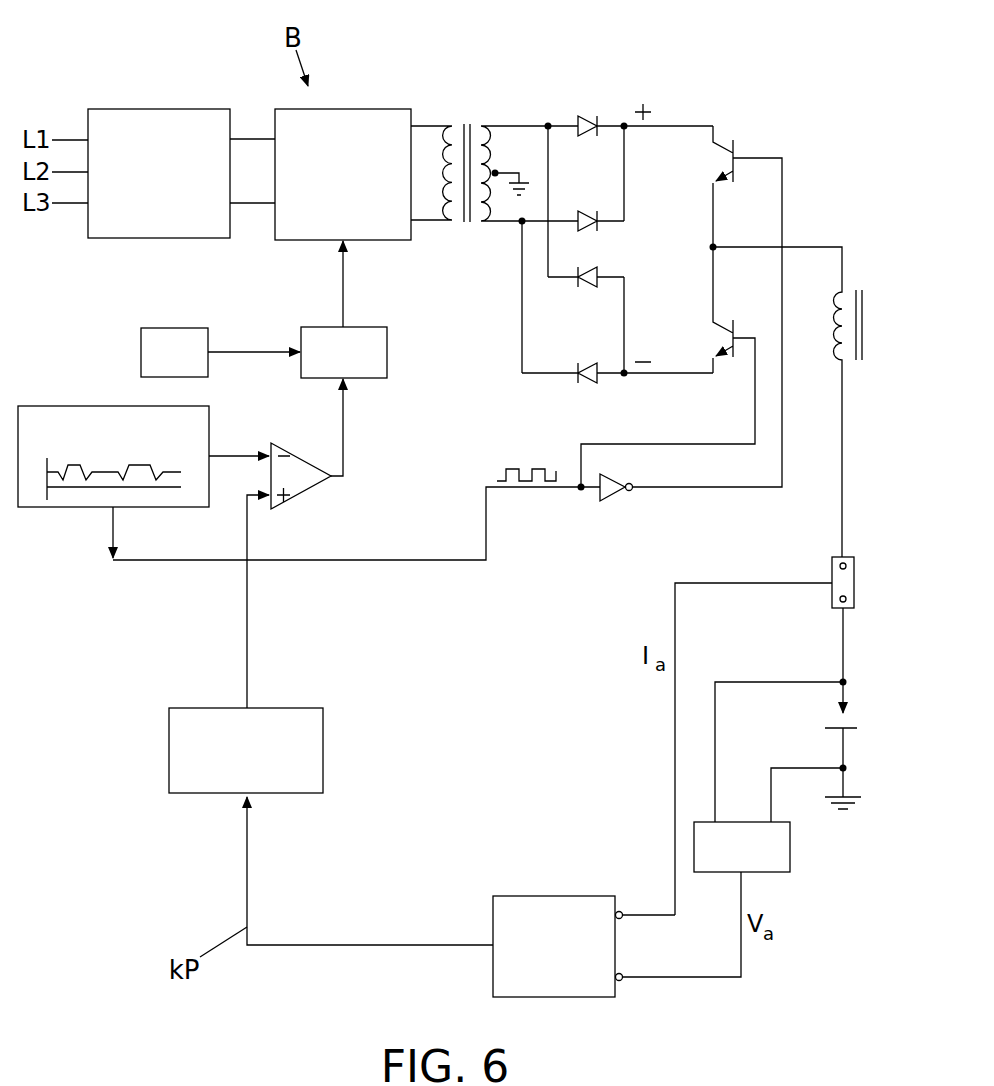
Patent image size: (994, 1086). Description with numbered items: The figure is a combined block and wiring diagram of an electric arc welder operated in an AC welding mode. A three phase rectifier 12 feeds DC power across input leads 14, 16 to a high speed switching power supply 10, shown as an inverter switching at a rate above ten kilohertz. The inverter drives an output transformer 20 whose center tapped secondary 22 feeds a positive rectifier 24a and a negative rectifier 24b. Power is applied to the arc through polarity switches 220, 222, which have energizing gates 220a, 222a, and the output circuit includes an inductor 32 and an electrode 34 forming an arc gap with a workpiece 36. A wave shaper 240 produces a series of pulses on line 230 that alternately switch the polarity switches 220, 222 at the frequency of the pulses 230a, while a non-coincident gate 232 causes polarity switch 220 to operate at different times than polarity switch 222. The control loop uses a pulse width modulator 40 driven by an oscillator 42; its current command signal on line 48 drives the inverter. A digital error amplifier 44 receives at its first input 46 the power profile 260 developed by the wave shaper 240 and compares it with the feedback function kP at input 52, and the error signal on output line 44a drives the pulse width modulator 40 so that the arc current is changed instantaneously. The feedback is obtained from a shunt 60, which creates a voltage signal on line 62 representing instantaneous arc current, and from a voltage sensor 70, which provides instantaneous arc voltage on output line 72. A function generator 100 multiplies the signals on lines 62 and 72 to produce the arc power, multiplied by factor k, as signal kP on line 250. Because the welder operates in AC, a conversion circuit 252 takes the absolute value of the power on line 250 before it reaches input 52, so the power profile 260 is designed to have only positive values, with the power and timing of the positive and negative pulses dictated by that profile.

The high speed switching type power supply 10 is at (354, 109).
The three phase rectifier 12 is at (156, 109).
The input lead 14 is at (247, 138).
The input lead 16 is at (252, 207).
The output transformer 20 is at (472, 120).
The center tapped secondary 22 is at (488, 142).
The positive rectifier 24a is at (592, 112).
The negative rectifier 24b is at (607, 265).
The inductor 32 is at (867, 305).
The electrode 34 is at (847, 709).
The workpiece 36 is at (855, 729).
The pulse width modulator 40 is at (377, 327).
The oscillator 42 is at (172, 327).
The digital error amplifier 44 is at (302, 493).
The error amplifier output line 44a is at (345, 433).
The first input 46 is at (235, 453).
The current command signal line 48 is at (345, 282).
The feedback input line 52 is at (246, 610).
The shunt 60 is at (850, 555).
The arc current signal line 62 is at (673, 748).
The voltage sensor 70 is at (790, 852).
The arc voltage output line 72 is at (708, 980).
The function generator 100 is at (540, 895).
The polarity switch 220 is at (735, 152).
The energizing gate 220a is at (688, 490).
The polarity switch 222 is at (728, 318).
The energizing gate 222a is at (663, 443).
The pulse line 230 is at (432, 562).
The pulses 230a is at (538, 467).
The non-coincident gate 232 is at (607, 500).
The wave shaper 240 is at (113, 446).
The kP output line 250 is at (322, 945).
The conversion circuit 252 is at (325, 752).
The power profile 260 is at (84, 468).